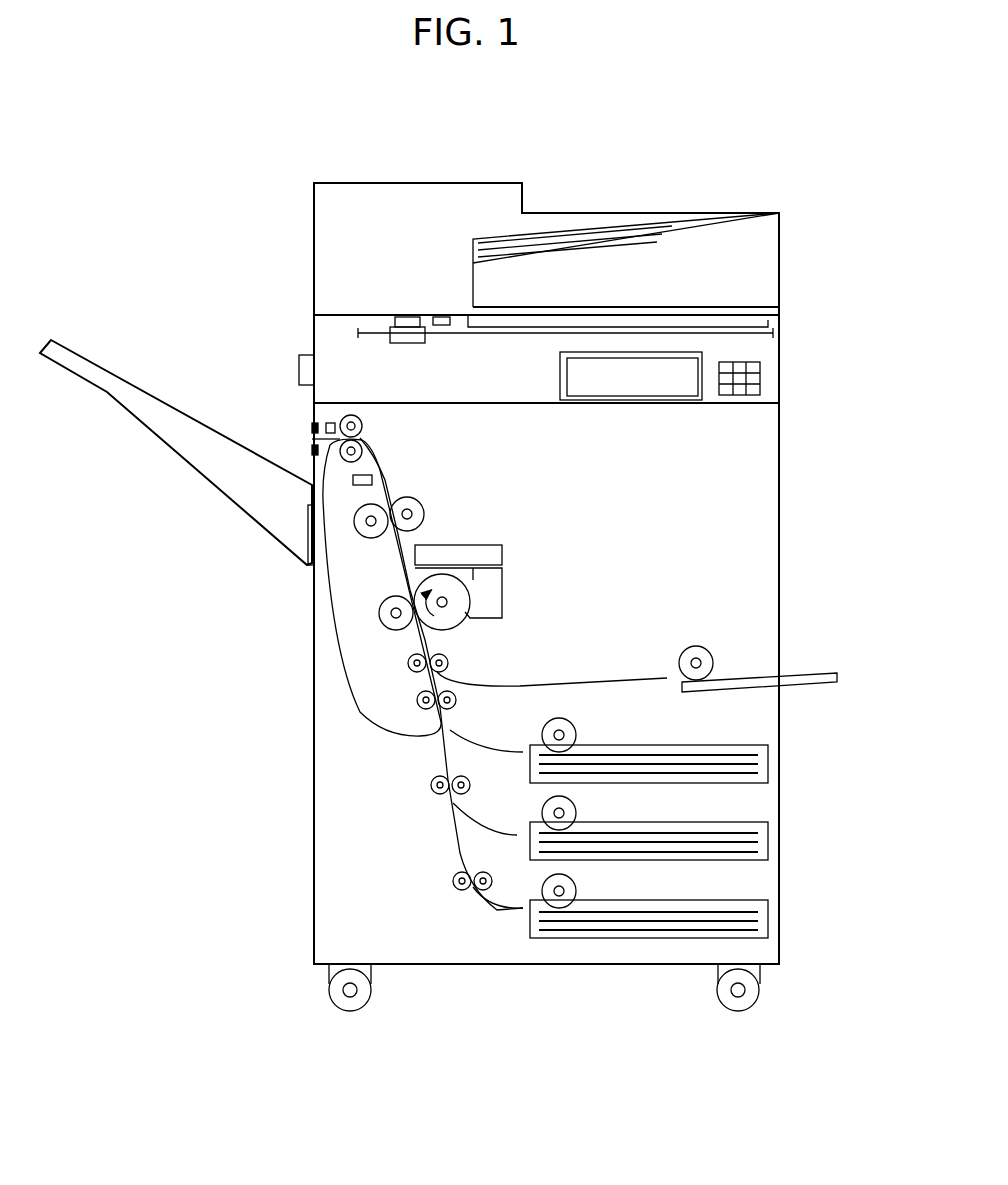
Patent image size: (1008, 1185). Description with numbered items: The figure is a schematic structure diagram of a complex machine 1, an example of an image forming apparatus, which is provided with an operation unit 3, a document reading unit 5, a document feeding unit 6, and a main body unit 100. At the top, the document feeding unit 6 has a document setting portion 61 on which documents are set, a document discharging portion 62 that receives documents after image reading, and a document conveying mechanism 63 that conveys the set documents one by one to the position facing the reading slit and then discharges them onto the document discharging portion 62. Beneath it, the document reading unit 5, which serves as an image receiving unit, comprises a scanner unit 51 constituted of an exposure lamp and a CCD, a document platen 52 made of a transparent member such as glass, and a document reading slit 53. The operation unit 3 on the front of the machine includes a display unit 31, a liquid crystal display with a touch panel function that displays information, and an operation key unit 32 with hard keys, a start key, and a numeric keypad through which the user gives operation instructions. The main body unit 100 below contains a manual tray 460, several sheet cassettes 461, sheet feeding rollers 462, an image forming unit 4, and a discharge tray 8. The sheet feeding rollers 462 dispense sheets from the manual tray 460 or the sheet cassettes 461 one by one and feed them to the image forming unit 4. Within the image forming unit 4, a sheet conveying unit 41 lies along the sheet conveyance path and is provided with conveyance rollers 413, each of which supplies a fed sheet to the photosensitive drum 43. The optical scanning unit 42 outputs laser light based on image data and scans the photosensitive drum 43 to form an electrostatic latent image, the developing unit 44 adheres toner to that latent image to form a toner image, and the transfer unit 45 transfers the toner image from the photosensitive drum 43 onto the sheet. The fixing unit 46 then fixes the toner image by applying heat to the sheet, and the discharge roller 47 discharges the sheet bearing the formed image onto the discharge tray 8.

The complex machine 1 is at (127, 181).
The main body unit 100 is at (755, 553).
The document feeding unit 6 is at (582, 211).
The document setting portion 61 is at (692, 212).
The document discharging portion 62 is at (710, 307).
The document conveying mechanism 63 is at (365, 263).
The document reading unit 5 is at (341, 345).
The scanner unit 51 is at (405, 343).
The document platen 52 is at (773, 322).
The document reading slit 53 is at (397, 318).
The operation unit 3 is at (560, 373).
The display unit 31 is at (620, 385).
The operation key unit 32 is at (737, 394).
The discharge tray 8 is at (190, 480).
The discharge roller 47 is at (340, 421).
The fixing unit 46 is at (378, 548).
The image forming unit 4 is at (362, 599).
The transfer unit 45 is at (387, 623).
The optical scanning unit 42 is at (502, 554).
The developing unit 44 is at (502, 592).
The photosensitive drum 43 is at (452, 620).
The sheet conveying unit 41 is at (425, 821).
The conveyance rollers 413 is at (412, 665).
The manual tray 460 is at (798, 685).
The sheet feeding rollers 462 is at (702, 648).
The sheet cassettes 461 is at (763, 772).